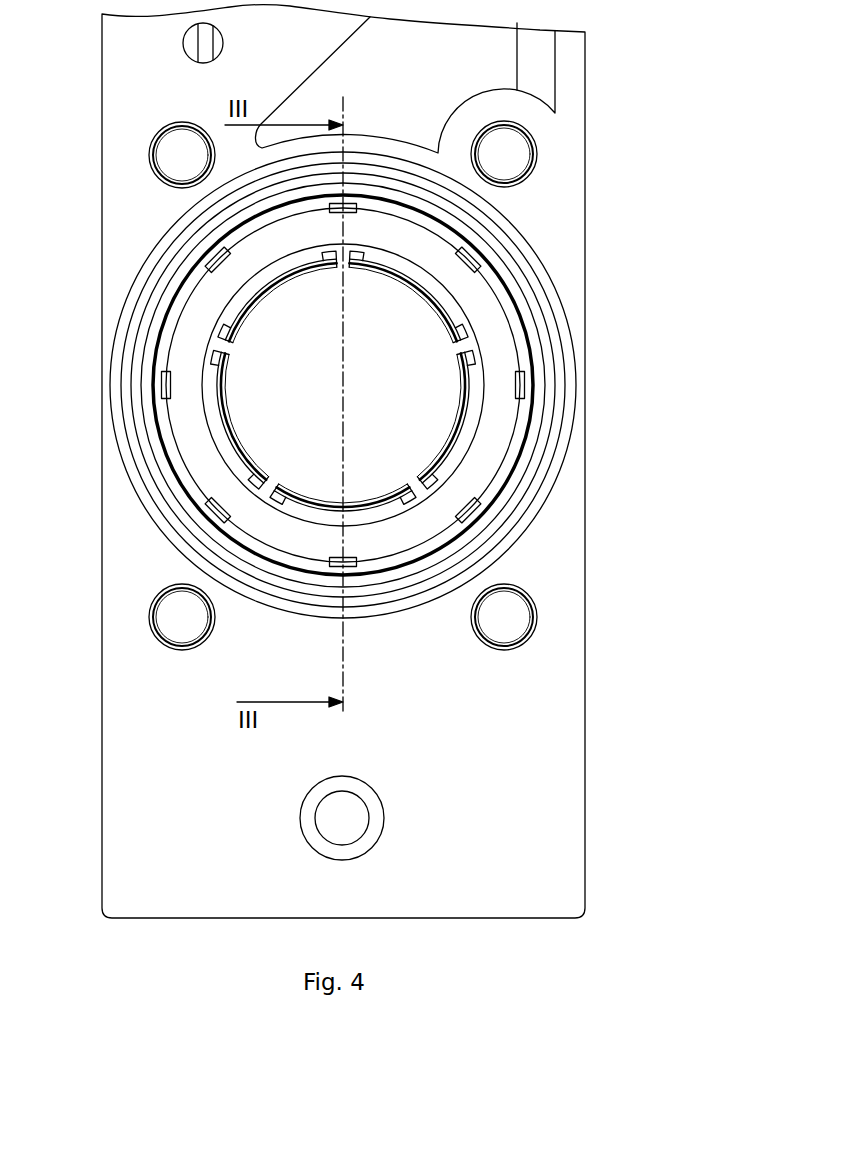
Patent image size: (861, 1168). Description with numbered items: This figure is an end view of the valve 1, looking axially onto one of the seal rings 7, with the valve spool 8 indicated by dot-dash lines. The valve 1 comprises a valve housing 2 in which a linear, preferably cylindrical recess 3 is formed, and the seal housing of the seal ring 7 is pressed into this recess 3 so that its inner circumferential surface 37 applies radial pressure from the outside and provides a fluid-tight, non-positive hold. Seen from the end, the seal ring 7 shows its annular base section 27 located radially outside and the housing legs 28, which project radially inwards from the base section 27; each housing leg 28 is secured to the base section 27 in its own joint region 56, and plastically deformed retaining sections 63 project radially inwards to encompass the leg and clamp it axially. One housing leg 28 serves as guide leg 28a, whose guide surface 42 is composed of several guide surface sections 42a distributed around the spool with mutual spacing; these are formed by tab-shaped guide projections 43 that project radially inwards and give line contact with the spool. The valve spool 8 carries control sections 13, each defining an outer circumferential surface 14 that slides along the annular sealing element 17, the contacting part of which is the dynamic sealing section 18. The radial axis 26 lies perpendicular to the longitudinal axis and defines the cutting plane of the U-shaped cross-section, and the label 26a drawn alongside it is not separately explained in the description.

The valve 1 is at (620, 62).
The valve housing 2 is at (582, 244).
The recess 3 is at (293, 385).
The inner circumferential surface 37 is at (170, 452).
The seal ring 7 is at (410, 434).
The valve spool 8 is at (507, 406).
The control section 13 is at (445, 383).
The outer circumferential surface 14 is at (447, 381).
The annular sealing element 17 is at (447, 381).
The dynamic sealing section 18 is at (447, 381).
The radial axis 26 is at (405, 85).
The recess edge 26a is at (337, 97).
The annular base section 27 is at (452, 286).
The housing leg 28 is at (410, 434).
The guide leg 28a is at (410, 434).
The guide surface 42 is at (342, 375).
The guide surface section 42a is at (334, 276).
The guide projection 43 is at (227, 348).
The joint region 56 is at (512, 441).
The retaining section 63 is at (350, 204).